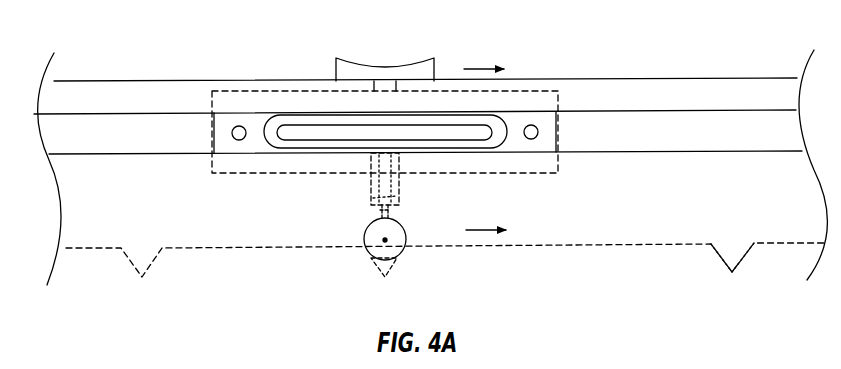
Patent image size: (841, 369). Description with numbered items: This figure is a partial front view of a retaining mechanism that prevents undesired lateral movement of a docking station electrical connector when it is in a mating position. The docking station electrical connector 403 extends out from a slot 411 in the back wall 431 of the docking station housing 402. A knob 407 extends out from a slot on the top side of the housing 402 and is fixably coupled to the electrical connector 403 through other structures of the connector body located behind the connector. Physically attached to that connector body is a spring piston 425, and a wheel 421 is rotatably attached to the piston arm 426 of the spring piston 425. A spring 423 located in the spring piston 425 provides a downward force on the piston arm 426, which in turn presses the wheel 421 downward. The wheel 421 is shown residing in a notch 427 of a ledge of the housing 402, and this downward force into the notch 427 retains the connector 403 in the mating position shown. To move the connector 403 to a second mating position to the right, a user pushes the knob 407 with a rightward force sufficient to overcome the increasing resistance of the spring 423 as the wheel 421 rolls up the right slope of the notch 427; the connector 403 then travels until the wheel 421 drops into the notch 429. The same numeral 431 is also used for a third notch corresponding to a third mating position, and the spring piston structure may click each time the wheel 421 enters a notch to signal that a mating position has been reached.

The docking station housing 402 is at (713, 77).
The docking station electrical connector 403 is at (500, 128).
The knob 407 is at (380, 65).
The slot 411 is at (150, 145).
The wheel 421 is at (368, 233).
The spring 423 is at (378, 188).
The spring piston 425 is at (400, 193).
The piston arm 426 is at (392, 213).
The notch 427 is at (375, 262).
The notch 429 is at (745, 257).
The back wall / third notch 431 is at (130, 262).